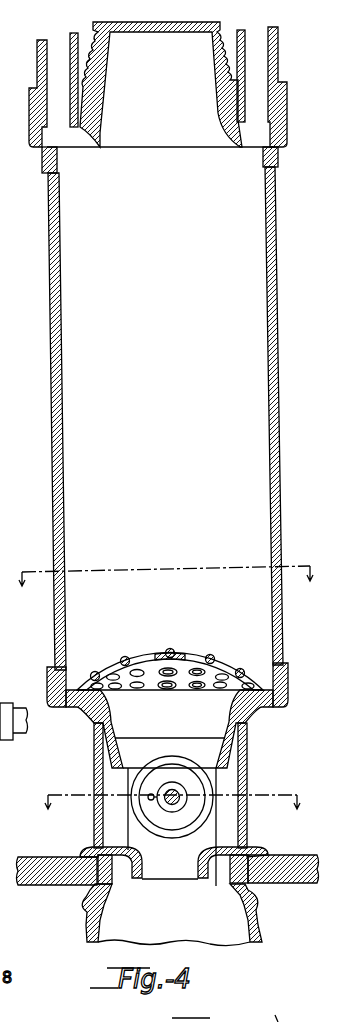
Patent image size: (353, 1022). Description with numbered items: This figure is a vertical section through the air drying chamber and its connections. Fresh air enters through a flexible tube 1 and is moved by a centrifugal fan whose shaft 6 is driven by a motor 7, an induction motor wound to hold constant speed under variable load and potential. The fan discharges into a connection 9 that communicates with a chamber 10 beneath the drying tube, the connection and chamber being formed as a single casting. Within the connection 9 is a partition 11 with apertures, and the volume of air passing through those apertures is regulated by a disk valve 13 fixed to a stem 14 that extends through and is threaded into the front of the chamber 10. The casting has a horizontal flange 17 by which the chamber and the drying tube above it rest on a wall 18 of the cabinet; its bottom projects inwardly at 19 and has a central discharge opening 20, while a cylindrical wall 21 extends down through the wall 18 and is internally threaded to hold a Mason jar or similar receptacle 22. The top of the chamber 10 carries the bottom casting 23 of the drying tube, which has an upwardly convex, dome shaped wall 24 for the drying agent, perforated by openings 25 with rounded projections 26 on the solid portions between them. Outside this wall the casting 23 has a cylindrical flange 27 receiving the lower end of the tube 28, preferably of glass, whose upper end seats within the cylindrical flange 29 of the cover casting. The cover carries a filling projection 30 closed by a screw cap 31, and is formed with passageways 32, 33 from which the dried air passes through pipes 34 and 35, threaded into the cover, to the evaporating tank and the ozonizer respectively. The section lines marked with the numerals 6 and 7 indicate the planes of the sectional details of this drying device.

The flexible tube 1 is at (35, 725).
The shaft 6 is at (172, 804).
The motor 7 is at (165, 577).
The connection 9 is at (129, 833).
The chamber 10 is at (247, 780).
The partition 11 is at (218, 806).
The disk valve 13 is at (172, 797).
The stem 14 is at (185, 795).
The horizontal flange 17 is at (263, 848).
The wall 18 is at (305, 841).
The inwardly projecting bottom 19 is at (222, 878).
The central discharge opening 20 is at (168, 880).
The cylindrical wall 21 is at (96, 887).
The receptacle 22 is at (86, 922).
The bottom casting 23 is at (257, 703).
The dome shaped wall 24 is at (182, 657).
The openings 25 is at (138, 658).
The rounded projections 26 is at (240, 668).
The cylindrical flange 27 is at (290, 671).
The tube 28 is at (273, 479).
The cylindrical flange 29 is at (279, 160).
The filling projection 30 is at (170, 95).
The screw cap 31 is at (100, 22).
The passageway 32 is at (252, 143).
The passageway 33 is at (66, 146).
The pipe 34 is at (278, 62).
The pipe 35 is at (37, 58).